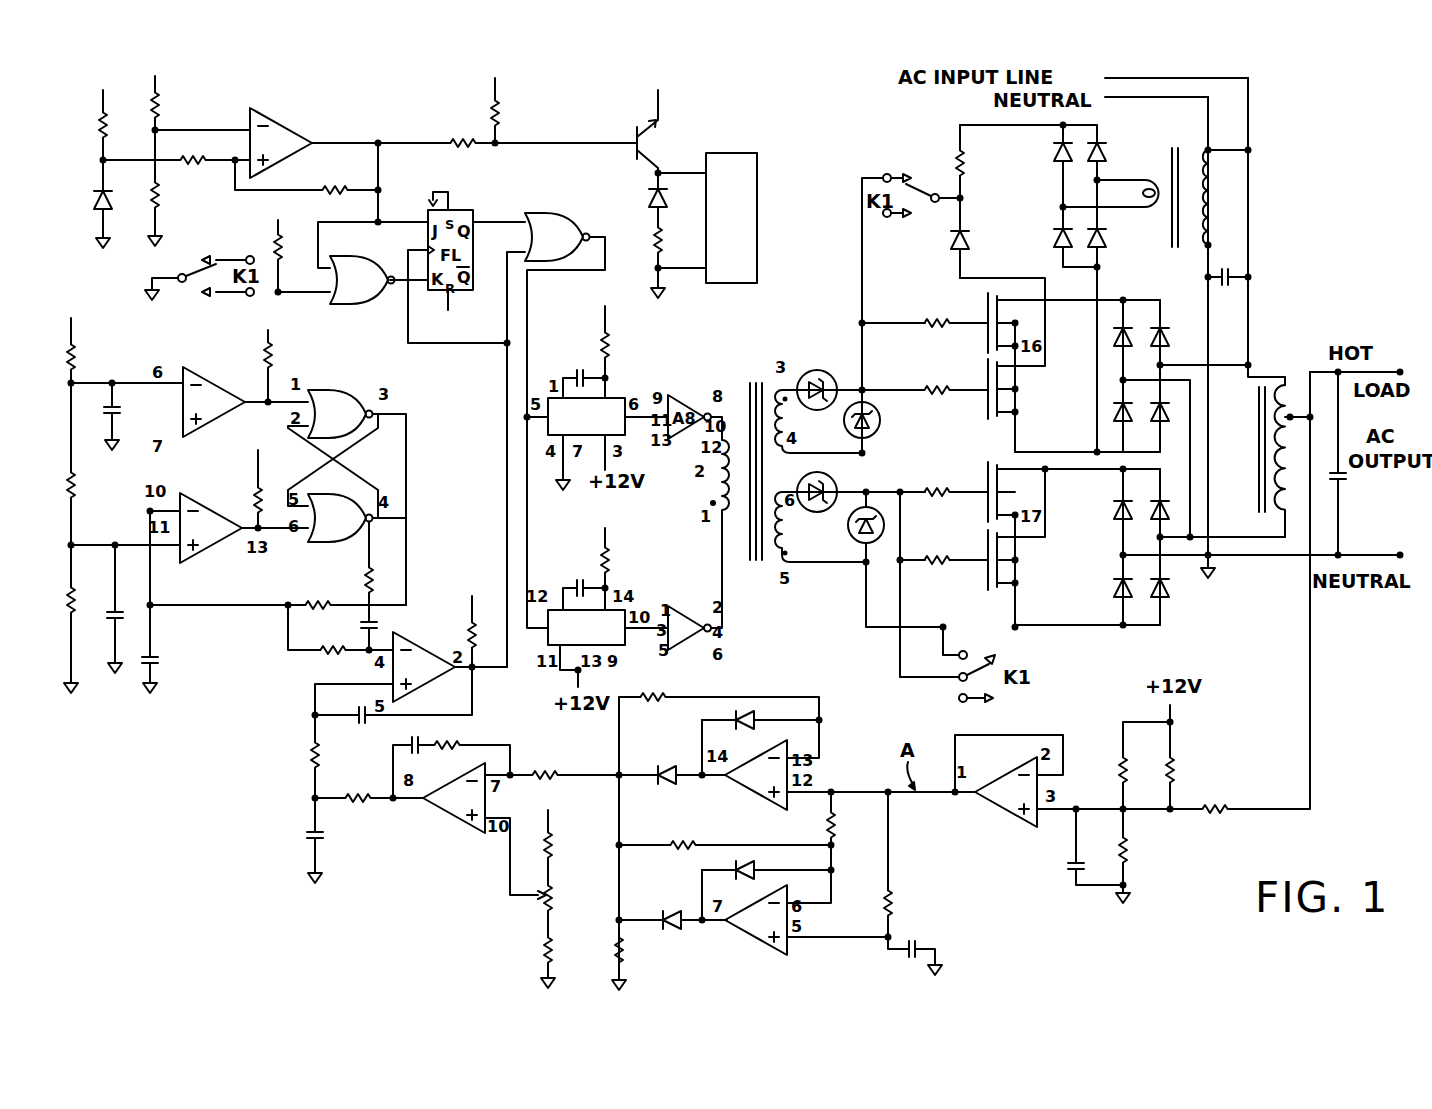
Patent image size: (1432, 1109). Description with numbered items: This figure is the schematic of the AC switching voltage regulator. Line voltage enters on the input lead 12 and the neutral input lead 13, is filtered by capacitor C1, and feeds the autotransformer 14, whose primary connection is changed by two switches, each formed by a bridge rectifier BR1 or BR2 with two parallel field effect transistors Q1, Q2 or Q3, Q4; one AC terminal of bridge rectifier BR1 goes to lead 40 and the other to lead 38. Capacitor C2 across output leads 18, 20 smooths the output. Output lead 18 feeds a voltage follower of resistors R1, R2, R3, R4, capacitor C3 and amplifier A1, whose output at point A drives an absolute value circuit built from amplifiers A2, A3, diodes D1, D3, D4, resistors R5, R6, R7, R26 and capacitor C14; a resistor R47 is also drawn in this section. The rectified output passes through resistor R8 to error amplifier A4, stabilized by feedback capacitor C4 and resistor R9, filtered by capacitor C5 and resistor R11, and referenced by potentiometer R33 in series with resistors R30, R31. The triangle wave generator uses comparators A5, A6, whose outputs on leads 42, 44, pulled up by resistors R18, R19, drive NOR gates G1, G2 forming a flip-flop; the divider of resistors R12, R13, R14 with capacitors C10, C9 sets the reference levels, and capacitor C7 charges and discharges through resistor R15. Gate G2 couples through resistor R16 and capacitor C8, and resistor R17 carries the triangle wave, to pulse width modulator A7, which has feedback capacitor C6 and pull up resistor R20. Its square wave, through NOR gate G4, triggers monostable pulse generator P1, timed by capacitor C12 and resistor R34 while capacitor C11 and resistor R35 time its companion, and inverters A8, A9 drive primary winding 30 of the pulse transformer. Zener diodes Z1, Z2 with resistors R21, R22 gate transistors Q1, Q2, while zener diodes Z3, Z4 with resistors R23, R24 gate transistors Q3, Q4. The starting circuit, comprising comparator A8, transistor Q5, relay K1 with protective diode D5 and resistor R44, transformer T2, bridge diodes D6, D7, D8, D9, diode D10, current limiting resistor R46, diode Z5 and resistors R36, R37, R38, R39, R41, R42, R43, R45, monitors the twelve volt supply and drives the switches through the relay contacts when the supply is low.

The input lead 12 is at (1250, 127).
The neutral input lead 13 is at (1160, 100).
The autotransformer 14 is at (1288, 396).
The output lead 18 is at (1376, 372).
The output lead 20 is at (1363, 555).
The primary winding 30 is at (722, 505).
The lead 38 is at (1228, 537).
The input terminal 40 is at (1250, 377).
The lead 42 is at (245, 396).
The lead 44 is at (283, 533).
The amplifier A1 is at (1006, 792).
The comparator A2 is at (756, 775).
The comparator A3 is at (756, 920).
The amplifier A4 is at (454, 798).
The comparator A5 is at (214, 402).
The comparator A6 is at (211, 528).
The comparator A7 is at (424, 667).
The comparator A8 is at (281, 143).
The inverter A9 is at (689, 628).
The NOR gate G1 is at (340, 414).
The NOR gate G2 is at (340, 518).
The NOR gate G4 is at (557, 237).
The monostable pulse generator P1 is at (586, 416).
The relay K1 is at (731, 218).
The transformer T2 is at (1135, 180).
The bridge rectifier BR1 is at (1141, 363).
The bridge rectifier BR2 is at (1169, 548).
The field effect transistor Q1 is at (982, 320).
The field effect transistor Q2 is at (982, 389).
The field effect transistor Q3 is at (982, 491).
The field effect transistor Q4 is at (982, 559).
The transistor Q5 is at (663, 119).
The zener diode Z1 is at (817, 377).
The zener diode Z2 is at (879, 420).
The zener diode Z3 is at (817, 482).
The zener diode Z4 is at (848, 529).
The diode Z5 is at (81, 204).
The diode D1 is at (760, 711).
The gating diode D3 is at (766, 861).
The forward biasing diode D4 is at (673, 905).
The diode D5 is at (637, 198).
The diode D6 is at (1112, 150).
The diode D7 is at (1045, 236).
The diode D8 is at (1113, 236).
The diode D9 is at (1046, 150).
The diode D10 is at (983, 238).
The capacitor C1 is at (1225, 290).
The capacitor C2 is at (1355, 486).
The capacitor C3 is at (1053, 869).
The capacitor C4 is at (409, 733).
The capacitor C5 is at (333, 840).
The capacitor C6 is at (352, 727).
The capacitor C7 is at (167, 649).
The capacitor C8 is at (385, 631).
The capacitor C9 is at (100, 609).
The capacitor C10 is at (134, 416).
The capacitor C11 is at (570, 577).
The capacitor C12 is at (570, 368).
The capacitor C14 is at (919, 947).
The resistor R1 is at (1220, 821).
The resistor R2 is at (1187, 762).
The resistor R3 is at (1138, 765).
The resistor R4 is at (1140, 850).
The resistor R5 is at (848, 825).
The resistor R6 is at (725, 833).
The resistor R7 is at (653, 709).
The resistor R8 is at (544, 759).
The resistor R9 is at (450, 731).
The resistor R11 is at (290, 756).
The resistor R12 is at (84, 338).
The resistor R13 is at (96, 485).
The resistor R14 is at (93, 619).
The resistor R15 is at (323, 594).
The resistor R16 is at (347, 568).
The resistor R17 is at (332, 661).
The pull up resistor R18 is at (285, 339).
The pull up resistor R19 is at (250, 470).
The pull up resistor R20 is at (464, 619).
The resistor R21 is at (936, 338).
The resistor R22 is at (936, 404).
The resistor R23 is at (936, 507).
The resistor R24 is at (936, 575).
The resistor R26 is at (914, 899).
The resistor R30 is at (561, 835).
The resistor R31 is at (571, 961).
The potentiometer R33 is at (572, 909).
The resistor R34 is at (622, 321).
The resistor R35 is at (622, 539).
The resistor R36 is at (83, 113).
The resistor R37 is at (169, 91).
The resistor R38 is at (179, 213).
The resistor R39 is at (195, 171).
The resistor R41 is at (338, 179).
The resistor R42 is at (465, 157).
The resistor R43 is at (510, 98).
The resistor R44 is at (636, 240).
The resistor R45 is at (267, 244).
The current limiting resistor R46 is at (983, 161).
The resistor R47 is at (644, 950).